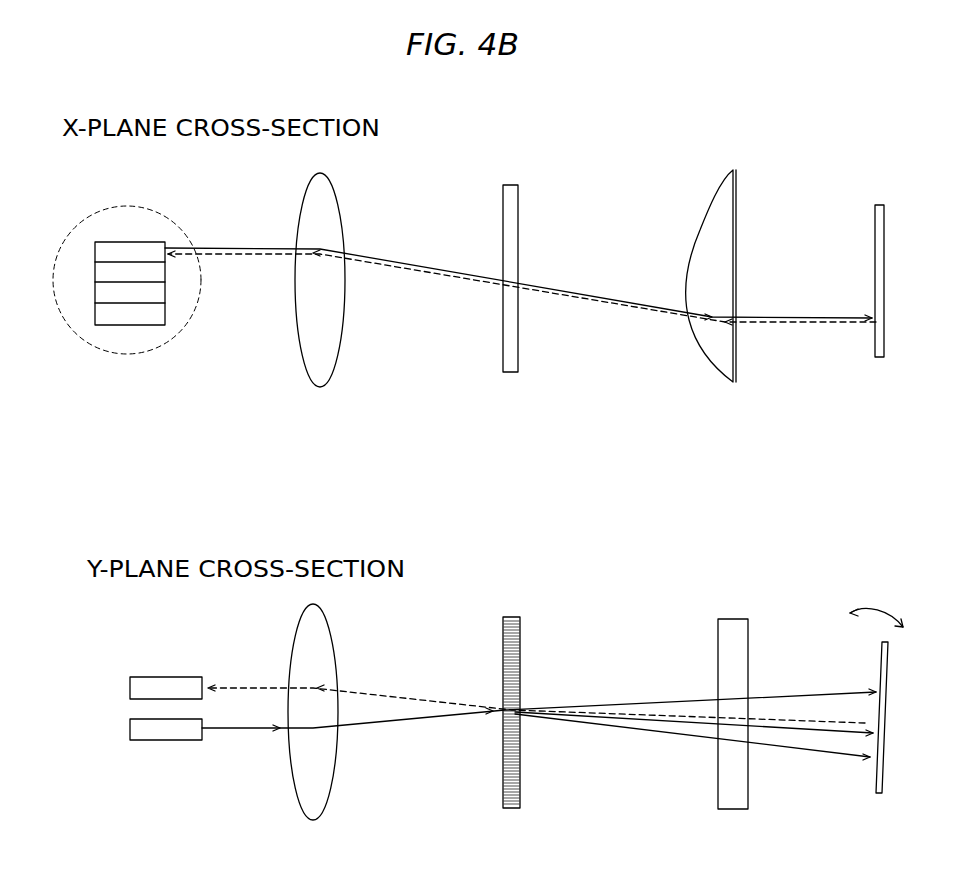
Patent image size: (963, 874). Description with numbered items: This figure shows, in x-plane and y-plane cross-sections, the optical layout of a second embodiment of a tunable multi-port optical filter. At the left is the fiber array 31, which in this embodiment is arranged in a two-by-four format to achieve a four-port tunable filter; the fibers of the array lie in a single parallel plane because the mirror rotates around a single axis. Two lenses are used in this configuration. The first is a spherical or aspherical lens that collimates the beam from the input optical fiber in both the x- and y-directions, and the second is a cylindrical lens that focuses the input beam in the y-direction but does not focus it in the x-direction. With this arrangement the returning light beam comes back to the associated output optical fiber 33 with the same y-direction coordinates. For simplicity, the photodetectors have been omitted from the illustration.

The fiber array 31 is at (158, 213).
The output optical fiber 33 is at (130, 688).